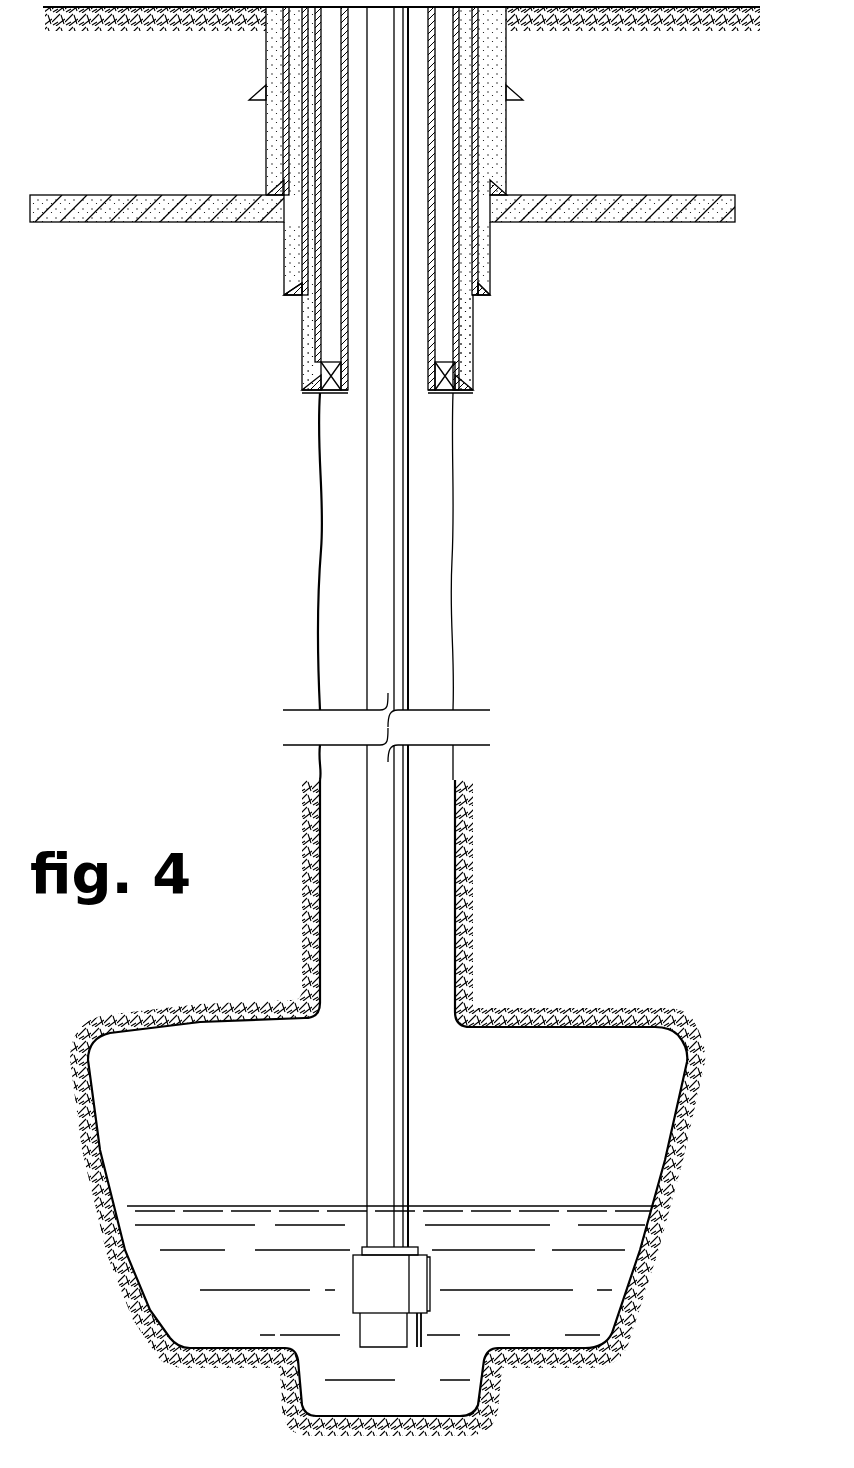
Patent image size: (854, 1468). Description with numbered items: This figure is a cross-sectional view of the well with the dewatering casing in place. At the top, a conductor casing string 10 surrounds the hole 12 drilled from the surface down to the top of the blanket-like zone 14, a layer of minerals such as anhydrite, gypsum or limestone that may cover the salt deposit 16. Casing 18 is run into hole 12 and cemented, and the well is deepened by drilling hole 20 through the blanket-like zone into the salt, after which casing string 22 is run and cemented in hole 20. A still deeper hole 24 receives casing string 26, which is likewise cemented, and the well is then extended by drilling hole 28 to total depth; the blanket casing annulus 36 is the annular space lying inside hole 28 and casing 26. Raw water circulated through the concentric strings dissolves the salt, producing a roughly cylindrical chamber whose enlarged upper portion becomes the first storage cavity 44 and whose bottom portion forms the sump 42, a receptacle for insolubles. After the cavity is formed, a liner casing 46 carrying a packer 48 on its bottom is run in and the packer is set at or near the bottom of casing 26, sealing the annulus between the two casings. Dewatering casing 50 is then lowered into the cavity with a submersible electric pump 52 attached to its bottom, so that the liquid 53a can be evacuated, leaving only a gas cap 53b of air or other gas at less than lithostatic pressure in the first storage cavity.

The conductor casing string 10 is at (507, 55).
The hole 12 is at (508, 128).
The casing 18 is at (508, 160).
The blanket-like zone 14 is at (622, 212).
The salt deposit 16 is at (665, 240).
The hole 20 is at (283, 266).
The casing string 22 is at (490, 250).
The hole 24 is at (303, 322).
The liner casing 46 is at (343, 343).
The casing string 26 is at (457, 377).
The packer 48 is at (337, 394).
The hole 28 is at (440, 450).
The blanket casing annulus 36 is at (443, 627).
The dewatering casing 50 is at (405, 527).
The first storage cavity 44 is at (93, 1149).
The sump 42 is at (487, 1380).
The gas cap 53b is at (660, 1165).
The liquid 53a is at (640, 1237).
The submersible electric pump 52 is at (428, 1273).